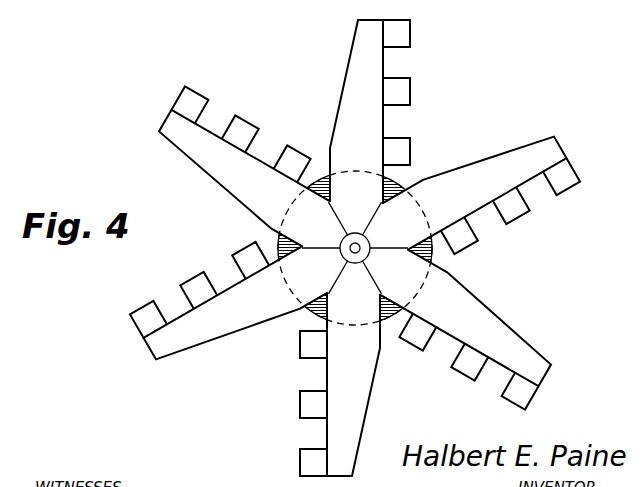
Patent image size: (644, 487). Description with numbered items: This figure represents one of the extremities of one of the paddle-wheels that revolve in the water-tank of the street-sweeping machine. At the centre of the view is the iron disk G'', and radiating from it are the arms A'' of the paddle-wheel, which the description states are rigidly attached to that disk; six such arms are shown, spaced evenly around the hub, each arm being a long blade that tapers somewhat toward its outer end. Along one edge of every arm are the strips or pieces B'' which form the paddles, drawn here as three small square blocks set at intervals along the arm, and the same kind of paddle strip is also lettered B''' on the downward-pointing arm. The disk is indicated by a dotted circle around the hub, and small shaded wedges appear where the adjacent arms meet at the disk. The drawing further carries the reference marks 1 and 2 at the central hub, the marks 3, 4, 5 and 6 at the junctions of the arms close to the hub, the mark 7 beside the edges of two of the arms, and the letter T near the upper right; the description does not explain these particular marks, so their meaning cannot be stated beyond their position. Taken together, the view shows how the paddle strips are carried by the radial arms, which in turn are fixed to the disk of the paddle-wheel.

The shaft 1 is at (359, 246).
The hub 2 is at (354, 233).
The arm joint 3 is at (389, 255).
The arm joint 4 is at (422, 309).
The arm joint 5 is at (430, 323).
The arm joint 6 is at (375, 277).
The arm edge 7 is at (290, 301).
The arm of the paddle-wheel A'' is at (369, 247).
The paddle strip B'' is at (400, 92).
The teeth B''' is at (301, 403).
The iron disk G'' is at (343, 111).
The wheel T is at (387, 199).